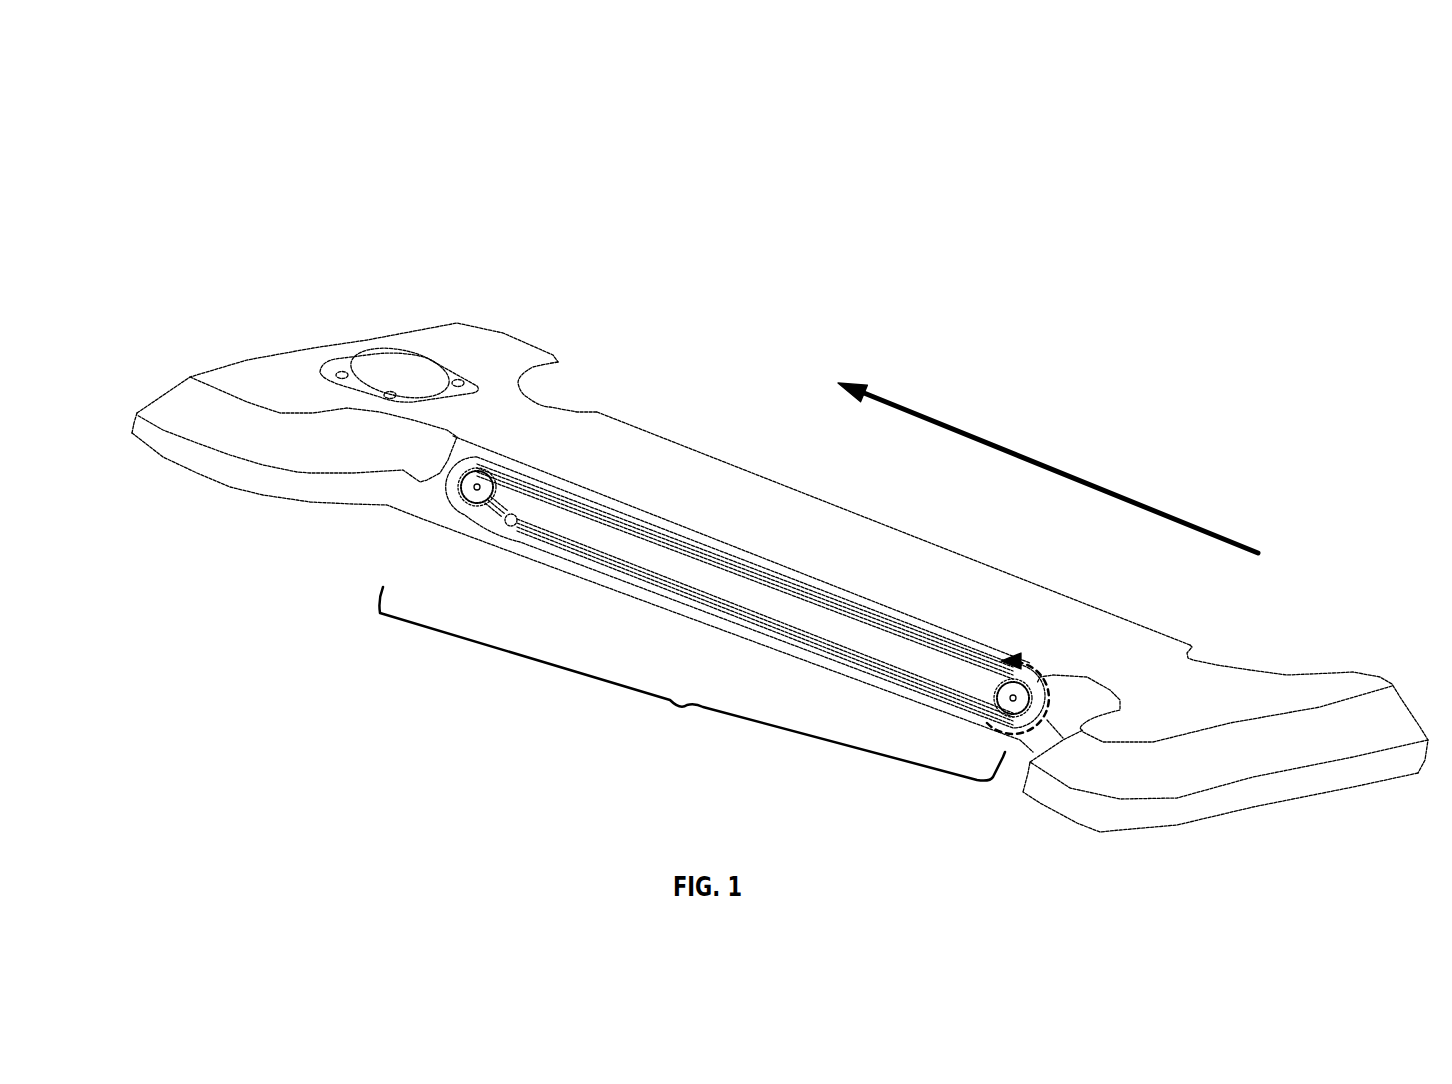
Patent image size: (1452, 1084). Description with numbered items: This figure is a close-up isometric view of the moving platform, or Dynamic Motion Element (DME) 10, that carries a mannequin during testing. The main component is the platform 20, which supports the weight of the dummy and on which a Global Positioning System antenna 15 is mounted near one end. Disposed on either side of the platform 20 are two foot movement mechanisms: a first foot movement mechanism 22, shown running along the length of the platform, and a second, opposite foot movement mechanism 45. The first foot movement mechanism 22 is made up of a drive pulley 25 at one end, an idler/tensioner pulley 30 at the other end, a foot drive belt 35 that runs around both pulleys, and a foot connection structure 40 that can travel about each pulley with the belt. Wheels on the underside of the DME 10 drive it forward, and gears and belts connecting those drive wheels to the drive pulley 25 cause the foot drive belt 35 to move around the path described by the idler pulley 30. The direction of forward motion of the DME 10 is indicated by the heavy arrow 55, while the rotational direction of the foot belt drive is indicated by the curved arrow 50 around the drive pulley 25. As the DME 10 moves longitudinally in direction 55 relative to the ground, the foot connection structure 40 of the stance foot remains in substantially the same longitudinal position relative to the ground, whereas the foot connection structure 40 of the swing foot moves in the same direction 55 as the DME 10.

The Dynamic Motion Element 10 is at (342, 218).
The Global Positioning System Antenna 15 is at (375, 380).
The platform 20 is at (773, 500).
The first foot movement mechanism 22 is at (687, 711).
The drive pulley 25 is at (1010, 699).
The idler/tensioner pulley 30 is at (477, 487).
The foot drive belt 35 is at (757, 618).
The foot connection structure 40 is at (512, 523).
The second (opposite) foot movement mechanism 45 is at (1012, 562).
The rotational direction of foot belt drive 50 is at (1027, 668).
The directional movement of DME 55 is at (1020, 458).